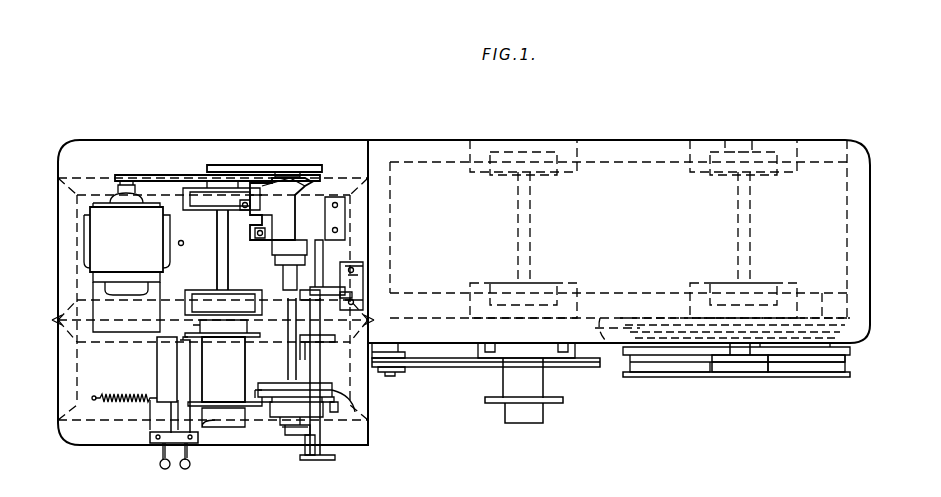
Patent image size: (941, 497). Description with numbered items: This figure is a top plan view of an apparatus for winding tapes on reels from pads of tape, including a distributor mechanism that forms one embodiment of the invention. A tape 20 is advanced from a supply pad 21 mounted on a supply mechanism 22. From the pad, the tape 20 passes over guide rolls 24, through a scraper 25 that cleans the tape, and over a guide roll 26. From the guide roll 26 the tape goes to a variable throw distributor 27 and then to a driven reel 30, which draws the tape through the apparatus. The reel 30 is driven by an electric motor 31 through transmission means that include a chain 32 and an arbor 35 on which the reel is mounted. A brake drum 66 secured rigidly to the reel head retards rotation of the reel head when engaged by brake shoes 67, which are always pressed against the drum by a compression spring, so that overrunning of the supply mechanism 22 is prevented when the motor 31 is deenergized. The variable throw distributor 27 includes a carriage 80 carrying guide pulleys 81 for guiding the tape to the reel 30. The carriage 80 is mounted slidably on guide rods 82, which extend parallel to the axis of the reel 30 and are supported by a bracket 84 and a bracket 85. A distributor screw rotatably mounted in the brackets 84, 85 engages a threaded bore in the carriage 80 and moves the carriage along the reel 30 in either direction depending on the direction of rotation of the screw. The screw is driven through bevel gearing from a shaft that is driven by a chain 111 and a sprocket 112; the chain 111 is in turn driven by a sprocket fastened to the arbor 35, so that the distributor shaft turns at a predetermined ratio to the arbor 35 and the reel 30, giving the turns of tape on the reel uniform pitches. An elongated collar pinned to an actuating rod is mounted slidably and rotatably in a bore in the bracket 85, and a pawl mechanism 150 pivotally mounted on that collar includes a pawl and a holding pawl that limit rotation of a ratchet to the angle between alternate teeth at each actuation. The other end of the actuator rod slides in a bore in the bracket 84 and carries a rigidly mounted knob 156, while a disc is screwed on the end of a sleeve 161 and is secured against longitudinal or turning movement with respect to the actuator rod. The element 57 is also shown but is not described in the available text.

The tape 20 is at (447, 367).
The supply pad 21 is at (850, 370).
The supply mechanism 22 is at (781, 398).
The guide rolls 24 is at (392, 372).
The scraper 25 is at (573, 365).
The guide roll 26 is at (737, 370).
The variable throw distributor 27 is at (383, 288).
The driven reel 30 is at (262, 425).
The electric motor 31 is at (98, 250).
The chain 32 is at (175, 175).
The arbor 35 is at (220, 250).
The slide plate 57 is at (795, 375).
The brake drum 66 is at (672, 350).
The brake shoes 67 is at (830, 293).
The carriage 80 is at (355, 412).
The guide pulleys 81 is at (262, 400).
The guide rods 82 is at (290, 345).
The bracket 84 is at (303, 430).
The bracket 85 is at (278, 282).
The chain 111 is at (263, 165).
The sprocket 112 is at (318, 168).
The pawl mechanism 150 is at (352, 270).
The knob 156 is at (330, 458).
The sleeve 161 is at (322, 368).